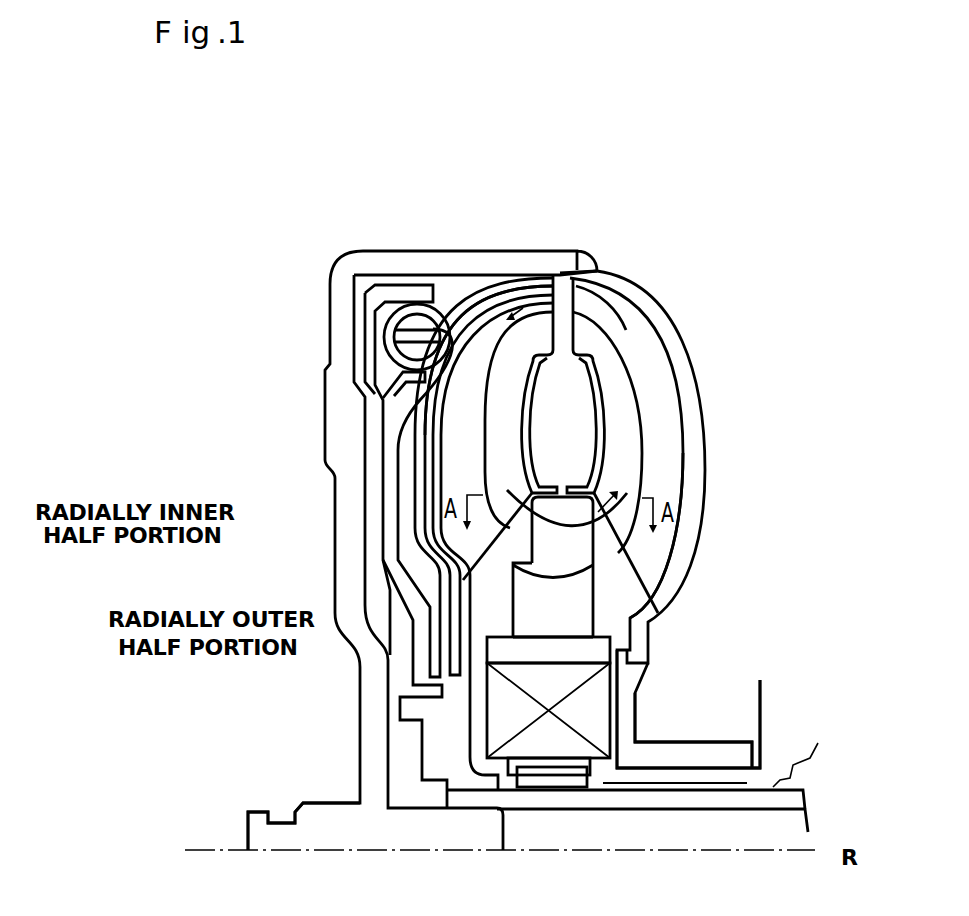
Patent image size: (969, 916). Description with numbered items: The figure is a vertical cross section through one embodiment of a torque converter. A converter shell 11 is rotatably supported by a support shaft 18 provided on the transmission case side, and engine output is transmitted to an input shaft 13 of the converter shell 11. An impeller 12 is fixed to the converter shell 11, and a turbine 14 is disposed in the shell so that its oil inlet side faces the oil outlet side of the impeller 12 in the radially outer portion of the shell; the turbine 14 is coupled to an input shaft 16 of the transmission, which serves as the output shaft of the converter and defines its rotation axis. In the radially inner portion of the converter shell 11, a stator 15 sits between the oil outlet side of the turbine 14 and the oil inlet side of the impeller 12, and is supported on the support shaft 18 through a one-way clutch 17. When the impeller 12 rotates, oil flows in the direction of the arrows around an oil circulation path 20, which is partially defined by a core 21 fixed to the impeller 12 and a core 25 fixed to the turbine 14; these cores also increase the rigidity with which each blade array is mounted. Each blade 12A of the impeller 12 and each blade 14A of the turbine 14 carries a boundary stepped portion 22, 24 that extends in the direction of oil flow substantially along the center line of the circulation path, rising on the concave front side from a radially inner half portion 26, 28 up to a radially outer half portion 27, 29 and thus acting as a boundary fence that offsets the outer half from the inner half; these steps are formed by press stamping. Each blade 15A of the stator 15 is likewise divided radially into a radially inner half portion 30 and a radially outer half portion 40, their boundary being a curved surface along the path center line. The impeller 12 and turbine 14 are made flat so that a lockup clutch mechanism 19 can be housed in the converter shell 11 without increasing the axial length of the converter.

The converter shell 11 is at (348, 260).
The impeller 12 is at (708, 522).
The blade of the impeller 12A is at (672, 483).
The input shaft of the converter shell 13 is at (302, 800).
The turbine 14 is at (495, 286).
The blade of the turbine 14A is at (497, 330).
The stator 15 is at (606, 560).
The blade of the stator 15A is at (585, 590).
The input shaft of the transmission 16 is at (800, 800).
The one-way clutch 17 is at (553, 743).
The support shaft 18 is at (665, 777).
The lockup clutch mechanism 19 is at (373, 413).
The oil circulation path 20 is at (655, 378).
The core of the impeller 21 is at (598, 368).
The boundary stepped portion of the impeller blade 22 is at (632, 367).
The boundary stepped portion of the turbine blade 24 is at (528, 324).
The core of the turbine 25 is at (537, 403).
The radially inner half portion of the impeller blade 26 is at (622, 400).
The radially outer half portion of the impeller blade 27 is at (653, 537).
The radially inner half portion of the turbine blade 28 is at (495, 446).
The radially outer half portion of the turbine blade 29 is at (462, 484).
The radially inner half portion of the stator blade 30 is at (547, 543).
The radially outer half portion of the stator blade 40 is at (527, 598).